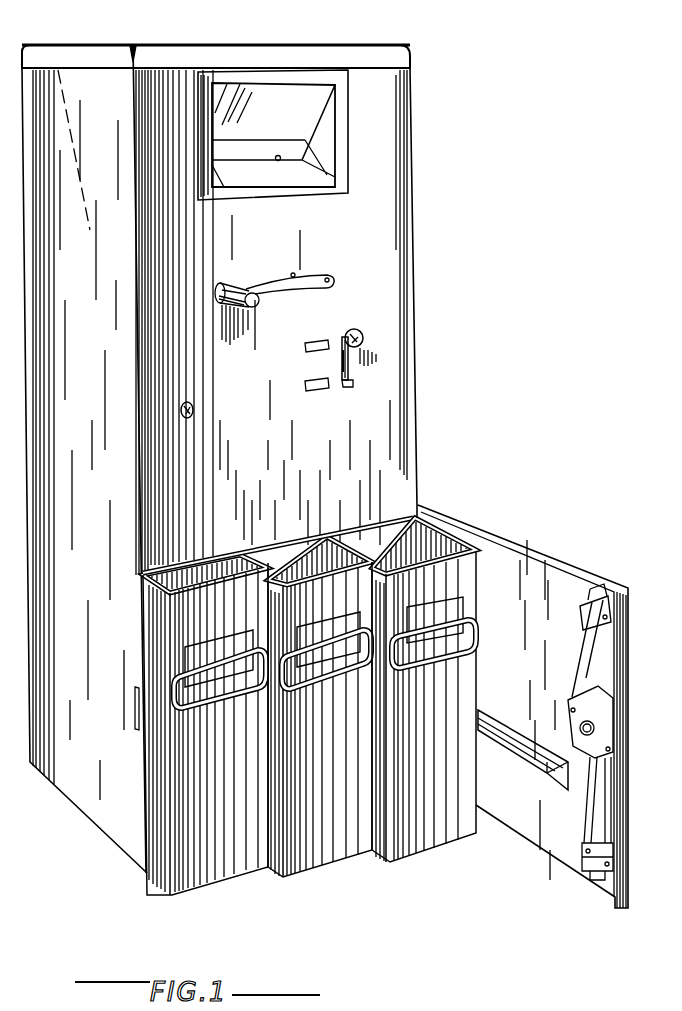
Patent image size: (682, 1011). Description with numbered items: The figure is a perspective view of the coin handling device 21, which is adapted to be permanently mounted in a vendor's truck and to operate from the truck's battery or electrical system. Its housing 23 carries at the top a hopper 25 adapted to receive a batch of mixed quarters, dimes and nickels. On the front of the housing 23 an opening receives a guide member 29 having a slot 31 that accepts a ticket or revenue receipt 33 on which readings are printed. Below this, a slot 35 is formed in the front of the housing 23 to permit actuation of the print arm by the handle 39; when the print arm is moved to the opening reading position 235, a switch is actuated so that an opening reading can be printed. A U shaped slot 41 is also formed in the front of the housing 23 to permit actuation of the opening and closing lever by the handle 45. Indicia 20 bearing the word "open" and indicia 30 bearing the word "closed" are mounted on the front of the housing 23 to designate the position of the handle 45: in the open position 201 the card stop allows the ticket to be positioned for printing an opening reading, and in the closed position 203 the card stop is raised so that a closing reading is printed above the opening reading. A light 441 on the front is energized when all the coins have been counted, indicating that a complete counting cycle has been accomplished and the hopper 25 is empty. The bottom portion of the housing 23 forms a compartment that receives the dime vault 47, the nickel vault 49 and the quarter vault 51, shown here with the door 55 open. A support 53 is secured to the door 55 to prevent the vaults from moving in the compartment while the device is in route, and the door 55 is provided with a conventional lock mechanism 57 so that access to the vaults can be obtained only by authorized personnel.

The coin handling device 21 is at (420, 228).
The housing 23 is at (405, 445).
The hopper 25 is at (245, 42).
The guide member 29 is at (325, 137).
The slot 31 is at (280, 161).
The ticket or revenue receipt 33 is at (258, 145).
The slot 35 is at (294, 273).
The handle 39 is at (247, 295).
The opening reading position 235 is at (330, 280).
The indicia 20 is at (308, 343).
The indicia 30 is at (318, 391).
The open position 201 is at (343, 342).
The handle 45 is at (361, 332).
The U shaped slot 41 is at (343, 363).
The closed position 203 is at (350, 387).
The light 441 is at (181, 417).
The dime vault 47 is at (233, 870).
The nickel vault 49 is at (345, 847).
The quarter vault 51 is at (466, 823).
The door 55 is at (540, 567).
The support 53 is at (500, 728).
The lock mechanism 57 is at (573, 695).